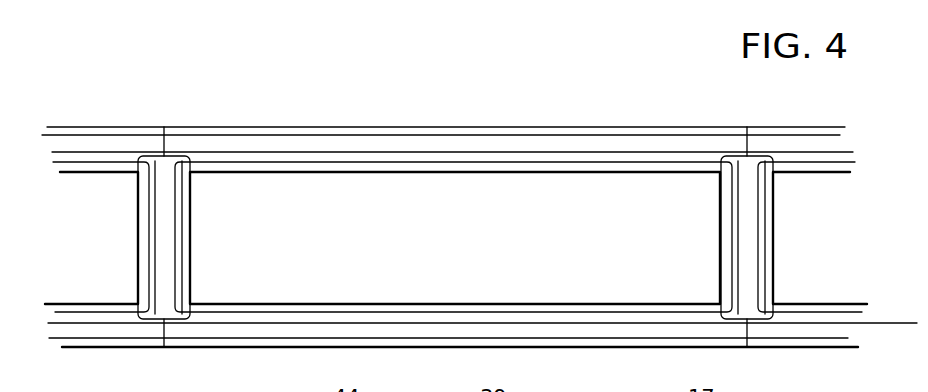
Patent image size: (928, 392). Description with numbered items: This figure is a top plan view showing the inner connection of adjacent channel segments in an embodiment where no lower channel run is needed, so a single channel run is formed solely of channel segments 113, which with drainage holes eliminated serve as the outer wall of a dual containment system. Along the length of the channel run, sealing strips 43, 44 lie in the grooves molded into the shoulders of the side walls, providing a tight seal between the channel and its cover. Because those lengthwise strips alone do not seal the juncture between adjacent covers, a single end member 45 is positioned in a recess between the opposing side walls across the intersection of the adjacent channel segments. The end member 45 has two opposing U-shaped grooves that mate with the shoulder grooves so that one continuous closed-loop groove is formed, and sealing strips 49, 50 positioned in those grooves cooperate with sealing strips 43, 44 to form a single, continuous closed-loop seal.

The channel segment 113 is at (106, 143).
The sealing strip 43 is at (327, 304).
The sealing strip 44 is at (302, 163).
The end member 45 is at (170, 312).
The sealing strip 49 is at (149, 217).
The sealing strip 50 is at (175, 254).